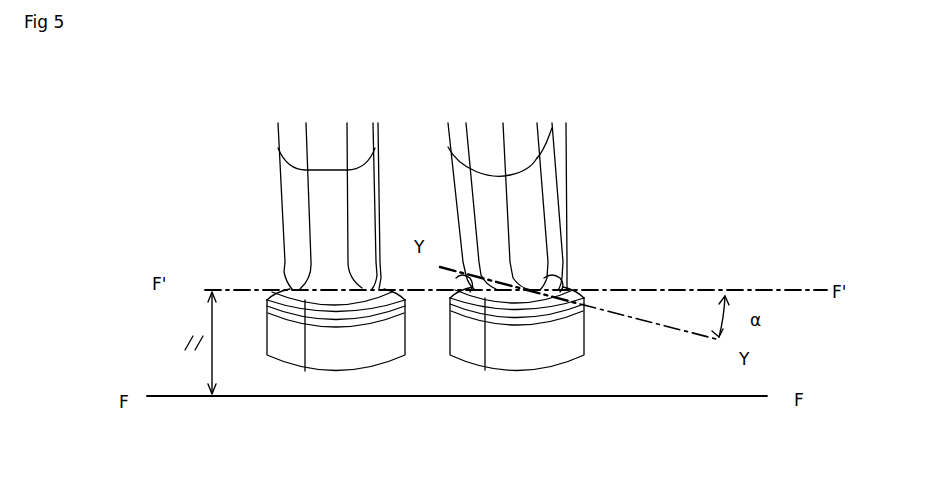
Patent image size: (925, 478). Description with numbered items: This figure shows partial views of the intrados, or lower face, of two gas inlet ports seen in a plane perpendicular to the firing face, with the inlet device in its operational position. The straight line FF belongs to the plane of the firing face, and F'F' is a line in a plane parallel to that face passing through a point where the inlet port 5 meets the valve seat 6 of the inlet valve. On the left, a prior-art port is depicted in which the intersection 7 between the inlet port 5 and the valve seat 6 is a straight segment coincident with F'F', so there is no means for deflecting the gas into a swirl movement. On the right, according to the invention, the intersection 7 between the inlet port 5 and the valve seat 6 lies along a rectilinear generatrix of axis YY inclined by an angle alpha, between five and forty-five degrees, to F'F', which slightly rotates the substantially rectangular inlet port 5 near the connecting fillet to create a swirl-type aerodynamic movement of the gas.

The inlet port 5 is at (300, 259).
The valve seat 6 is at (290, 349).
The intersection 7 is at (560, 283).